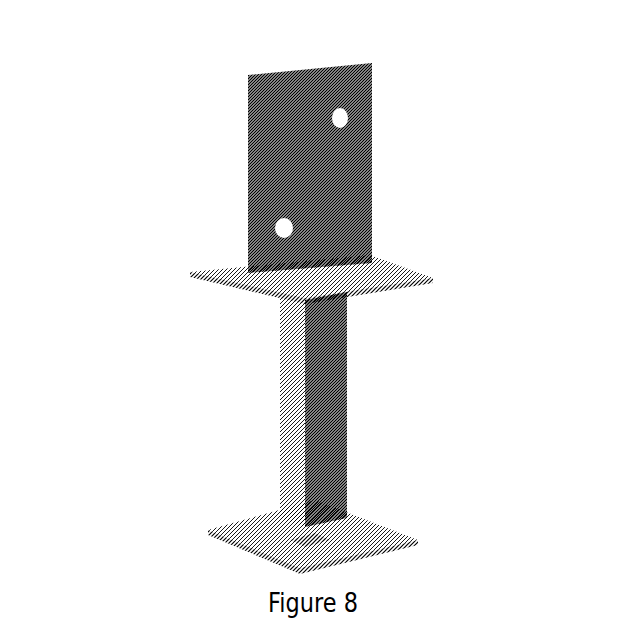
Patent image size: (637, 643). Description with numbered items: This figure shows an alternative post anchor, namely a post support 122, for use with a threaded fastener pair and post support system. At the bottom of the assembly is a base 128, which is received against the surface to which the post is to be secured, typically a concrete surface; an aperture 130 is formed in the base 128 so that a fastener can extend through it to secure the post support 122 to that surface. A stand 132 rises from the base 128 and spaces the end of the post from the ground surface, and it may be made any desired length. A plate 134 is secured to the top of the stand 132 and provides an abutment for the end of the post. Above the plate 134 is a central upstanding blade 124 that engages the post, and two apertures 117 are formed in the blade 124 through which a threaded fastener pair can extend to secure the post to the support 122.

The apertures 117 is at (346, 115).
The post support 122 is at (170, 176).
The central upstanding blade 124 is at (368, 195).
The base 128 is at (407, 535).
The aperture 130 is at (297, 548).
The stand 132 is at (346, 462).
The plate 134 is at (428, 275).